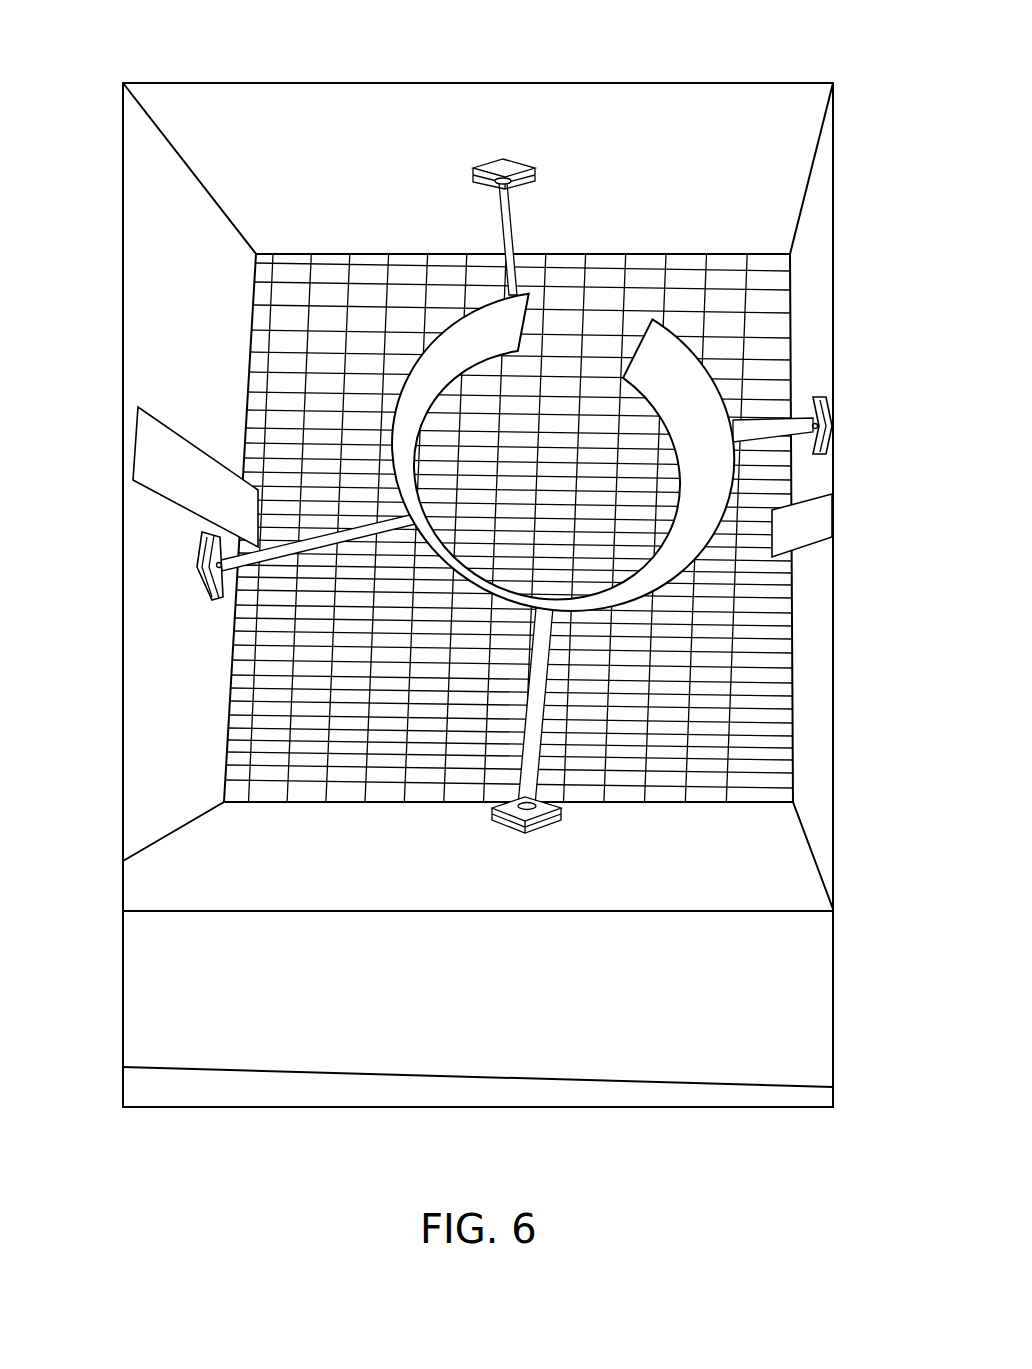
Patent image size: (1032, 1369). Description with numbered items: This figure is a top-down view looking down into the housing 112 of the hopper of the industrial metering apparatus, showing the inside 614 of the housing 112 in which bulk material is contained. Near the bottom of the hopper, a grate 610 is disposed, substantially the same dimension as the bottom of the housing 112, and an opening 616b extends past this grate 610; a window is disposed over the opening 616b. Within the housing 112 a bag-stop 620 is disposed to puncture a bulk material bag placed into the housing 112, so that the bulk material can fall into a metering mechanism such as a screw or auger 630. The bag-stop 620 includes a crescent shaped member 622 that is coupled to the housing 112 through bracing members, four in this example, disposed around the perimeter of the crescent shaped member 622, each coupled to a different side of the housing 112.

The housing 112 is at (249, 112).
The grate 610 is at (786, 762).
The inside 614 is at (838, 294).
The opening 616b is at (147, 445).
The bag-stop 620 is at (492, 162).
The crescent shaped member 622 is at (669, 358).
The auger 630 is at (733, 402).